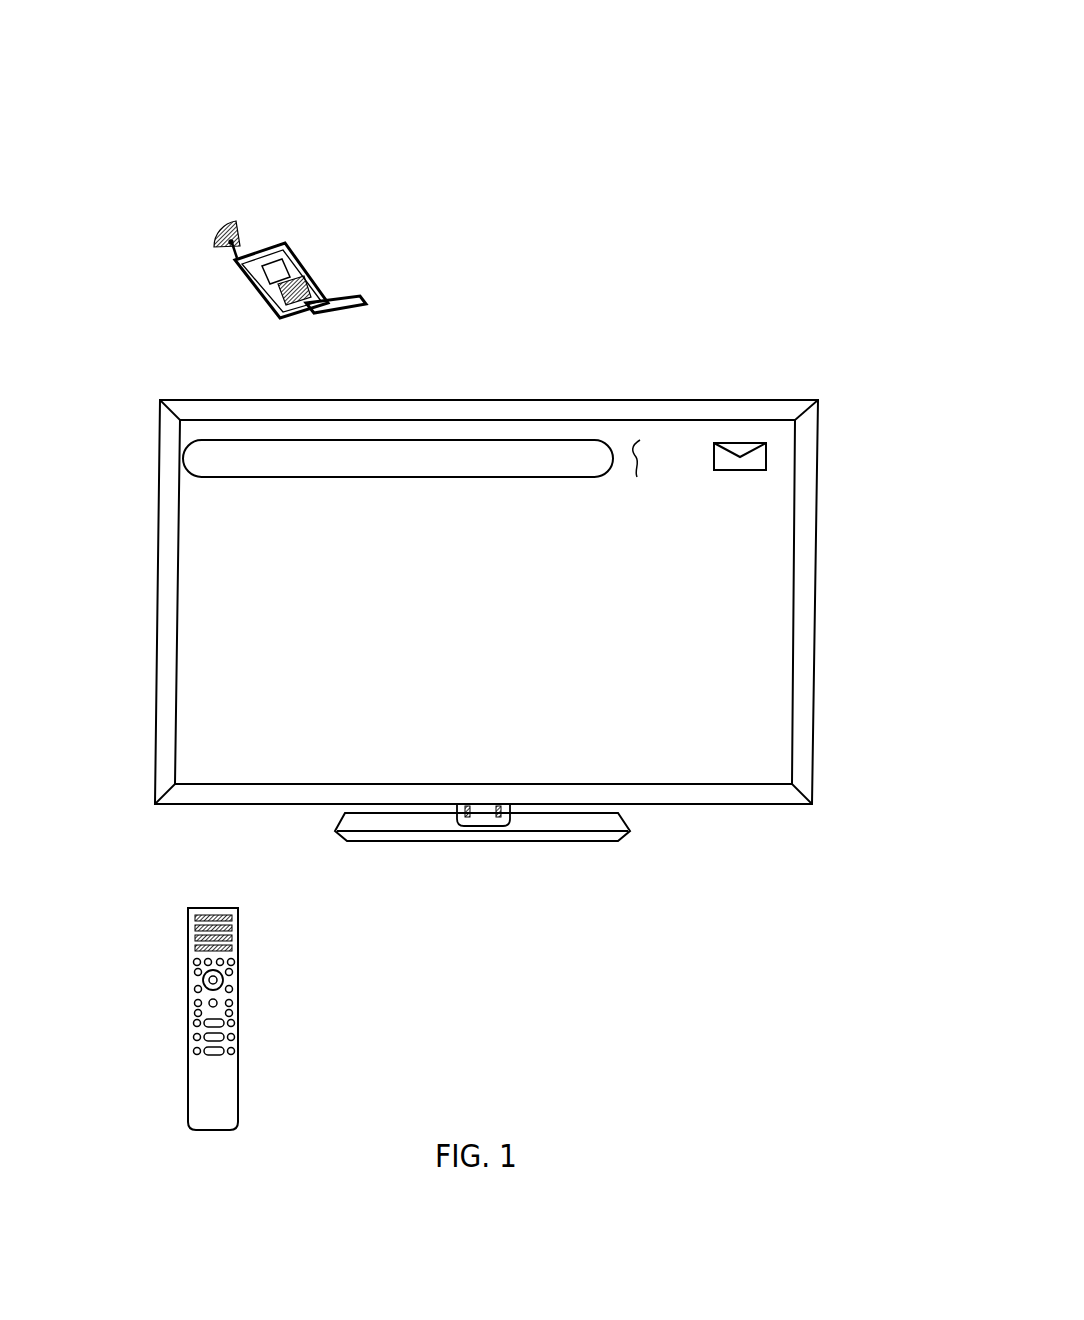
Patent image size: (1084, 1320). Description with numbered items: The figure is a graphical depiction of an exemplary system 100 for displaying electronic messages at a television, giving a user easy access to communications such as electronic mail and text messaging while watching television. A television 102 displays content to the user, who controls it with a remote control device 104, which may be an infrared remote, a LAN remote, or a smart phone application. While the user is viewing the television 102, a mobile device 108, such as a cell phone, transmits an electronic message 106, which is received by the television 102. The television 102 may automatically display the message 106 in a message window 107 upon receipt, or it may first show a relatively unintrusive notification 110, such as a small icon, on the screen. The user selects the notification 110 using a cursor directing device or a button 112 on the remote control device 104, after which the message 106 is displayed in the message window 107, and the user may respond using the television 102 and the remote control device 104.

The system 100 is at (168, 95).
The television 102 is at (813, 752).
The remote control device 104 is at (190, 1094).
The electronic message 106 is at (645, 456).
The message window 107 is at (183, 458).
The mobile device 108 is at (317, 276).
The notification 110 is at (766, 456).
The button 112 is at (203, 978).